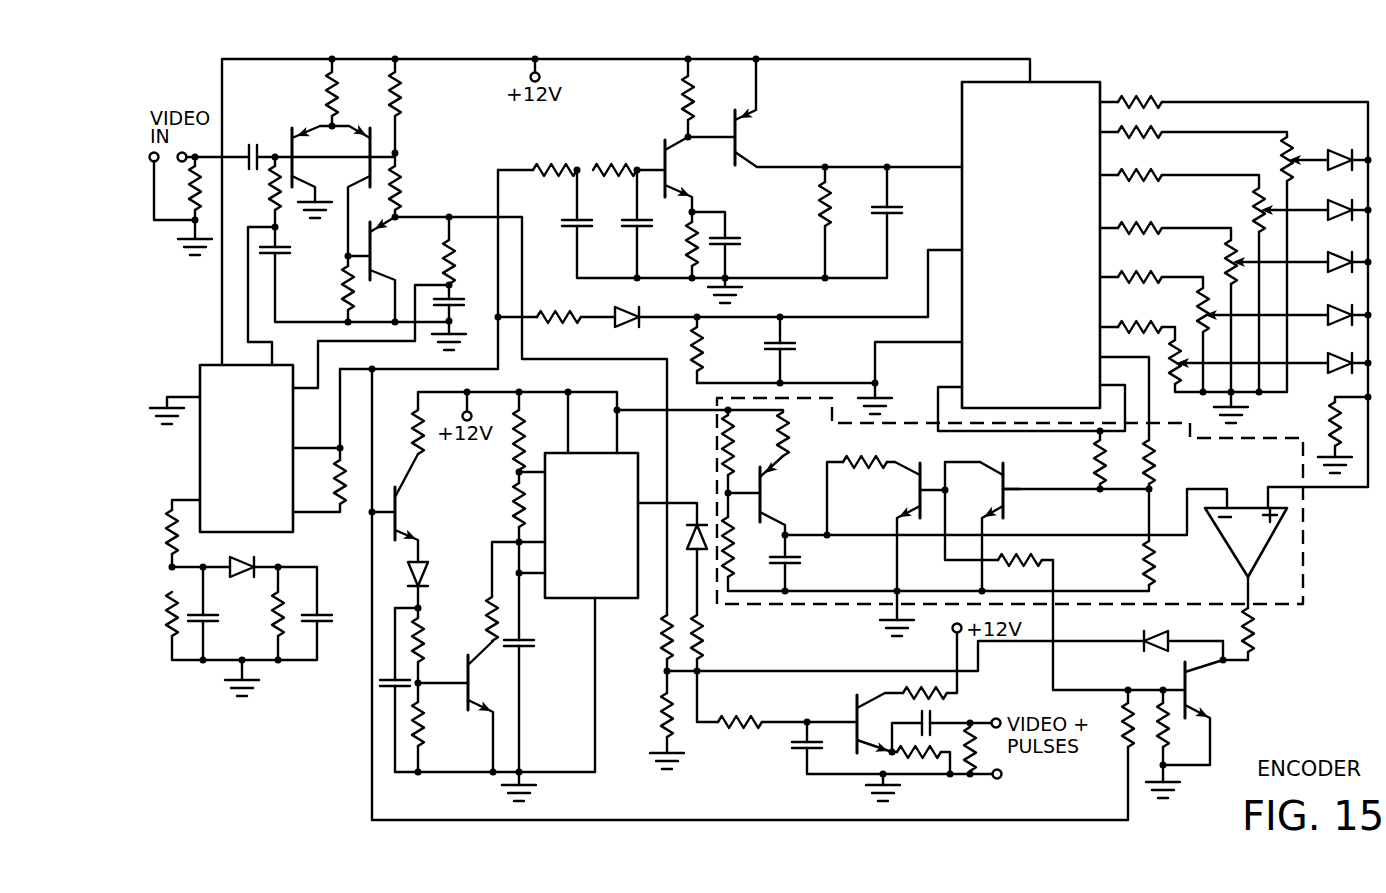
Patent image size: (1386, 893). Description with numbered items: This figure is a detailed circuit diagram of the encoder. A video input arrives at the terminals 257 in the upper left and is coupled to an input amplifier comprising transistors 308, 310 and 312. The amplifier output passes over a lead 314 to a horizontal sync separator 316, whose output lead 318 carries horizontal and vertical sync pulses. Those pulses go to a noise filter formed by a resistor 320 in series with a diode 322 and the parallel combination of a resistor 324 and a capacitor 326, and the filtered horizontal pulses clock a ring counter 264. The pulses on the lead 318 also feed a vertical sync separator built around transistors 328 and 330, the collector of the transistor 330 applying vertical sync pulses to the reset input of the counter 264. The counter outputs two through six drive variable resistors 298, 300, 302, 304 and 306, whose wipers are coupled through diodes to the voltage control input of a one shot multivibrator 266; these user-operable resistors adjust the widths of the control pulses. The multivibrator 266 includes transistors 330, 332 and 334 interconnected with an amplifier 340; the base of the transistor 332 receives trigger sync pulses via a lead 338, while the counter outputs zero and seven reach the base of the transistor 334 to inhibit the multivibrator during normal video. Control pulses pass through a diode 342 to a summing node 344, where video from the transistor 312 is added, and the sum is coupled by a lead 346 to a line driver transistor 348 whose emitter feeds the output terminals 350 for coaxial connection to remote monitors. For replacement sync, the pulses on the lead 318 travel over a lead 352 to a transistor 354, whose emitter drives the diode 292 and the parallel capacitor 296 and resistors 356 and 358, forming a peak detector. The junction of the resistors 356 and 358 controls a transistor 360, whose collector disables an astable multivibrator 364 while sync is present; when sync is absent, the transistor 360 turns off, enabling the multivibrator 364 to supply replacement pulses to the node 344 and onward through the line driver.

The video input terminal 257 is at (154, 162).
The ring counter 264 is at (962, 107).
The one shot multivibrator 266 is at (1250, 440).
The diode 292 is at (428, 556).
The capacitor 296 is at (384, 695).
The variable resistor 298 is at (1282, 157).
The variable resistor 300 is at (1260, 208).
The variable resistor 302 is at (1226, 253).
The variable resistor 304 is at (1201, 306).
The variable resistor 306 is at (1172, 351).
The transistor 308 is at (296, 147).
The transistor 310 is at (372, 140).
The transistor 312 is at (374, 256).
The lead 314 is at (361, 342).
The horizontal sync separator 316 is at (202, 444).
The output lead 318 is at (487, 382).
The resistor 320 is at (567, 300).
The diode 322 is at (625, 323).
The resistor 324 is at (708, 343).
The capacitor 326 is at (773, 350).
The transistor 328 is at (676, 170).
The transistor 330 is at (742, 132).
The transistor 332 is at (916, 492).
The transistor 334 is at (1009, 499).
The lead 338 is at (964, 560).
The amplifier 340 is at (1284, 566).
The diode 342 is at (1141, 634).
The summing node 344 is at (665, 671).
The lead 346 is at (701, 697).
The transistor 348 is at (854, 711).
The output terminals 350 is at (1008, 772).
The lead 352 is at (390, 410).
The transistor 354 is at (408, 508).
The resistor 356 is at (455, 628).
The resistor 358 is at (423, 737).
The transistor 360 is at (483, 680).
The astable multivibrator 364 is at (618, 600).